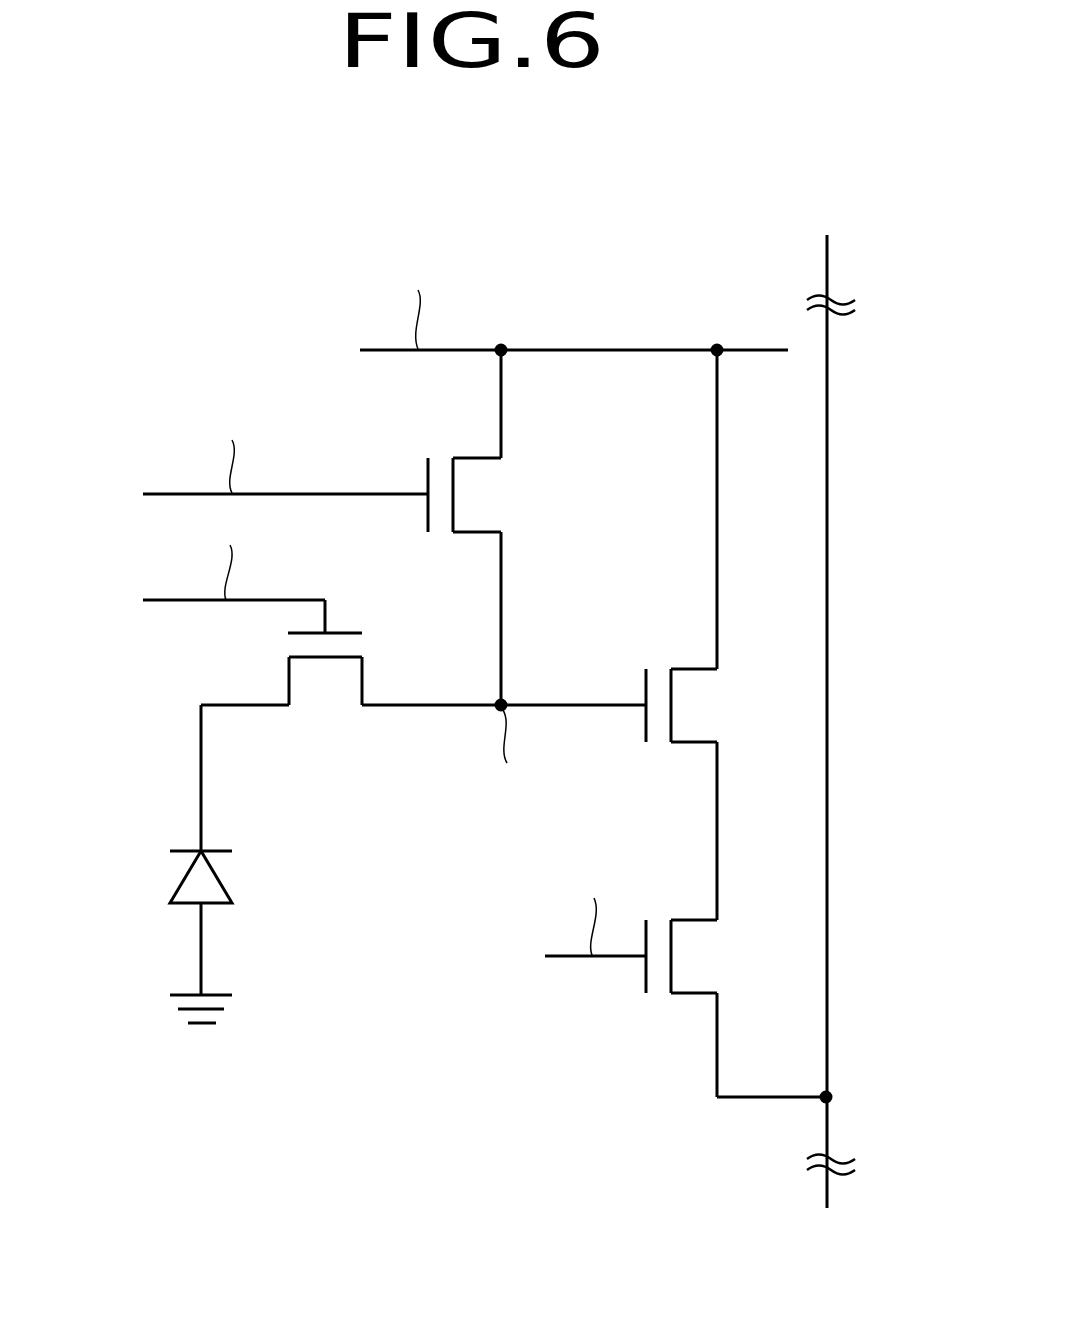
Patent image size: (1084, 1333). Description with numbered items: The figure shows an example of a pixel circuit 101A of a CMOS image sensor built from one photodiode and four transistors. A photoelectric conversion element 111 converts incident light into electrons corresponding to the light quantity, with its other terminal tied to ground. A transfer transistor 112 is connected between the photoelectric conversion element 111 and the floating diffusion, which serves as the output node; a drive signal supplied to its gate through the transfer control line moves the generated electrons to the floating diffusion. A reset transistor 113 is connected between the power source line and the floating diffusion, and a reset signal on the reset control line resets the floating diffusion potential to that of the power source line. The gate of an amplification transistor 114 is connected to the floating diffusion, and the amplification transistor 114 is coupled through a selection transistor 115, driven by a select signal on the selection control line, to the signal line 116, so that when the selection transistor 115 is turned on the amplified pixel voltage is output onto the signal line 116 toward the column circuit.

The pixel circuit 101A is at (275, 163).
The photoelectric conversion element 111 is at (178, 877).
The transfer transistor 112 is at (333, 693).
The reset transistor 113 is at (503, 488).
The amplification transistor 114 is at (684, 713).
The selection transistor 115 is at (688, 967).
The signal line 116 is at (830, 840).